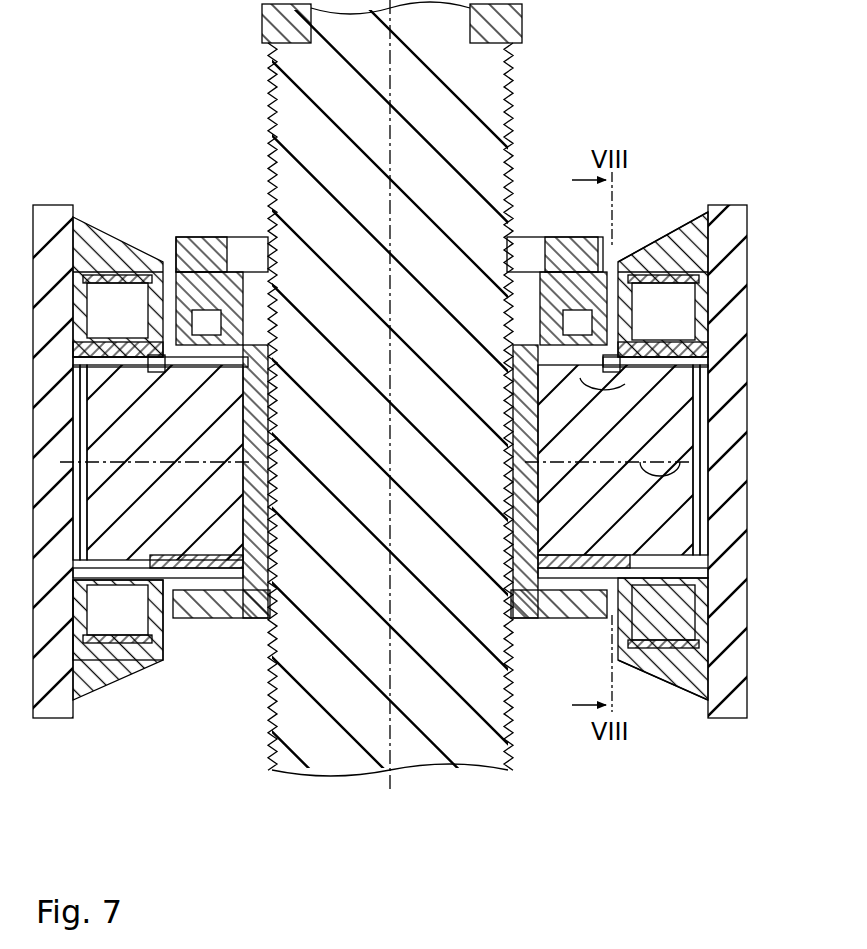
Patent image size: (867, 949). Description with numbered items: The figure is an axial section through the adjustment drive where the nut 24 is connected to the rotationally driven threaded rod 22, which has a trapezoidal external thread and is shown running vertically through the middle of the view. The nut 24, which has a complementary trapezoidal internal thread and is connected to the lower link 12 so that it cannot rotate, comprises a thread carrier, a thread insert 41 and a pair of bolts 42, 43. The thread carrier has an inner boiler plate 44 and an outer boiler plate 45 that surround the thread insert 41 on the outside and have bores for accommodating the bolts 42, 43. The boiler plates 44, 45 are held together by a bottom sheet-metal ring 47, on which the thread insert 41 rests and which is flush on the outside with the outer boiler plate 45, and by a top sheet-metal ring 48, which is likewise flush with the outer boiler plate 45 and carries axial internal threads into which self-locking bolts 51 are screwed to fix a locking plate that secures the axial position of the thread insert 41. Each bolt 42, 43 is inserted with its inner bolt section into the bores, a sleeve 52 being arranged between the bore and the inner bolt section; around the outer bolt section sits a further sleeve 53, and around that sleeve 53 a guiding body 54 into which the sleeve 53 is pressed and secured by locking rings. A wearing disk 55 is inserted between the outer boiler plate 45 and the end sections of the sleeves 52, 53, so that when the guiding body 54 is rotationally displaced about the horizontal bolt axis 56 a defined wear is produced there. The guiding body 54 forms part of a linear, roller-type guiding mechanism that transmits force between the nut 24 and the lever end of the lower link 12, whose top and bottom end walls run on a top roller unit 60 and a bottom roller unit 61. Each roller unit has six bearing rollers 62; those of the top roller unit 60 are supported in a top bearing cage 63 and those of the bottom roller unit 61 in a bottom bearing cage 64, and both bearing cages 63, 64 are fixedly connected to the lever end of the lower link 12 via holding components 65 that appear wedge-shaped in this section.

The lower link 12 is at (756, 252).
The threaded rod 22 is at (285, 133).
The nut 24 is at (190, 226).
The thread insert 41 is at (542, 500).
The bolt 42 is at (132, 548).
The bolt 43 is at (703, 440).
The inner boiler plate 44 is at (228, 580).
The outer boiler plate 45 is at (184, 620).
The bottom sheet-metal ring 47 is at (523, 616).
The top sheet-metal ring 48 is at (546, 236).
The self-locking bolt 51 is at (205, 236).
The sleeve 52 is at (700, 412).
The sleeve 53 is at (690, 366).
The guiding body 54 is at (705, 349).
The wearing disk 55 is at (585, 385).
The bolt axis 56 is at (645, 467).
The top roller unit 60 is at (672, 224).
The bottom roller unit 61 is at (672, 704).
The bearing roller 62 is at (670, 311).
The top bearing cage 63 is at (700, 287).
The bottom bearing cage 64 is at (690, 640).
The holding component 65 is at (703, 233).